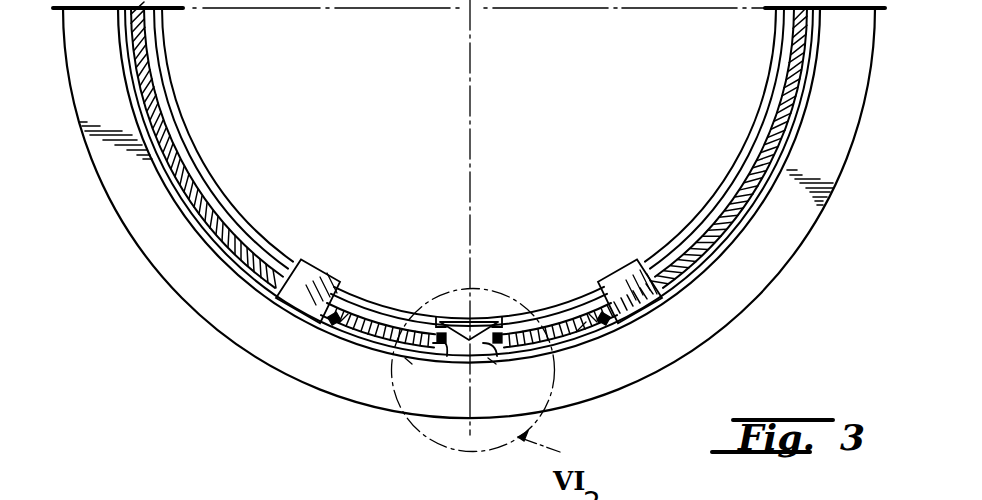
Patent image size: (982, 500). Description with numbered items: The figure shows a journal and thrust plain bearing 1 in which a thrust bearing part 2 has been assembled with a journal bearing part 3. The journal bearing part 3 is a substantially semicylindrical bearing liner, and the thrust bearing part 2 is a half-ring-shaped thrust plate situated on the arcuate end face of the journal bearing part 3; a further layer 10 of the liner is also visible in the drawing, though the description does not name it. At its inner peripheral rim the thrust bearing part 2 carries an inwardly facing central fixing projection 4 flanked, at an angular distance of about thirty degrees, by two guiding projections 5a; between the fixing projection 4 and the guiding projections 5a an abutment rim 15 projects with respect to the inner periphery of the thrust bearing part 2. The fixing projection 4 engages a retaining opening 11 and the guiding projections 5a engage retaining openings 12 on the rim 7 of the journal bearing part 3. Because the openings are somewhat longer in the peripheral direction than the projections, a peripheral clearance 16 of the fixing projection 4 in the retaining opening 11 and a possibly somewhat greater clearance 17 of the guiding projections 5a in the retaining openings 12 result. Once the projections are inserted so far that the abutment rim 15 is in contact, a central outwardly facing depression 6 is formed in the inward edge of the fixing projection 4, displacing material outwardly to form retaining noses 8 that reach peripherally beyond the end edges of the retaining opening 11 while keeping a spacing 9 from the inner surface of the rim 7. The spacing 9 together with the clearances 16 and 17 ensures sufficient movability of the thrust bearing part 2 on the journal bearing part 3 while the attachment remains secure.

The journal and thrust plain bearing 1 is at (188, 351).
The thrust bearing part 2 is at (151, 265).
The journal bearing part 3 is at (183, 190).
The fixing projection 4 is at (492, 360).
The guiding projections 5a is at (300, 280).
The depression 6 is at (478, 318).
The rim 7 is at (581, 327).
The retaining noses 8 is at (438, 318).
The spacing 9 is at (437, 332).
The inner liner 10 is at (188, 131).
The retaining opening 11 is at (410, 365).
The retaining openings 12 is at (345, 317).
The abutment rim 15 is at (356, 323).
The peripheral clearance 16 is at (435, 344).
The clearance 17 is at (325, 316).